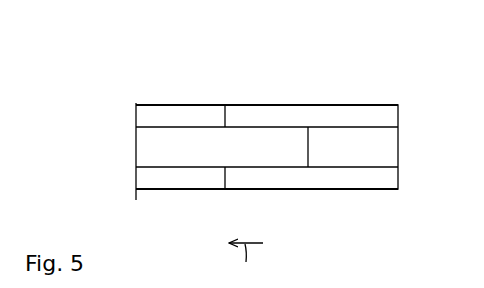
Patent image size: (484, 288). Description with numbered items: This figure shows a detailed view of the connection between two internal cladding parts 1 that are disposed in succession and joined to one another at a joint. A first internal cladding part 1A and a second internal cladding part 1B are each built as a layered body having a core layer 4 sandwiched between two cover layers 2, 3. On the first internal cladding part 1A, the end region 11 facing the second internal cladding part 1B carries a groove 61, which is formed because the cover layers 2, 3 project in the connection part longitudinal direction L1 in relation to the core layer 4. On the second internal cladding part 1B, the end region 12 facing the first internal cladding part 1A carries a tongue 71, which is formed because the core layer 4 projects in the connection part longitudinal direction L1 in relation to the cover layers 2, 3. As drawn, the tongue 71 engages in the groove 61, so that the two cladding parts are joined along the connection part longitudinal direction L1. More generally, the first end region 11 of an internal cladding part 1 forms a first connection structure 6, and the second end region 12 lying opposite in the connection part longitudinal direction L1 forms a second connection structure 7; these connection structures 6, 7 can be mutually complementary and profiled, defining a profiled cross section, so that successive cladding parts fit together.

The internal cladding part 1 is at (267, 151).
The first internal cladding part 1A is at (377, 88).
The second internal cladding part 1B is at (168, 92).
The cover layer 2 is at (147, 114).
The cover layer 3 is at (172, 181).
The core layer 4 is at (155, 144).
The first connection structure 6 is at (293, 105).
The second connection structure 7 is at (237, 126).
The end region 11 is at (280, 189).
The end region 12 is at (200, 105).
The groove 61 is at (308, 150).
The tongue 71 is at (278, 167).
The connection part longitudinal direction L1 is at (246, 265).